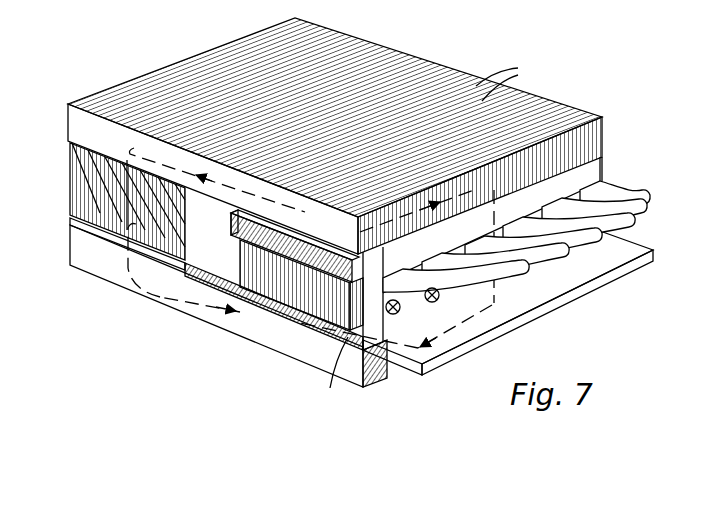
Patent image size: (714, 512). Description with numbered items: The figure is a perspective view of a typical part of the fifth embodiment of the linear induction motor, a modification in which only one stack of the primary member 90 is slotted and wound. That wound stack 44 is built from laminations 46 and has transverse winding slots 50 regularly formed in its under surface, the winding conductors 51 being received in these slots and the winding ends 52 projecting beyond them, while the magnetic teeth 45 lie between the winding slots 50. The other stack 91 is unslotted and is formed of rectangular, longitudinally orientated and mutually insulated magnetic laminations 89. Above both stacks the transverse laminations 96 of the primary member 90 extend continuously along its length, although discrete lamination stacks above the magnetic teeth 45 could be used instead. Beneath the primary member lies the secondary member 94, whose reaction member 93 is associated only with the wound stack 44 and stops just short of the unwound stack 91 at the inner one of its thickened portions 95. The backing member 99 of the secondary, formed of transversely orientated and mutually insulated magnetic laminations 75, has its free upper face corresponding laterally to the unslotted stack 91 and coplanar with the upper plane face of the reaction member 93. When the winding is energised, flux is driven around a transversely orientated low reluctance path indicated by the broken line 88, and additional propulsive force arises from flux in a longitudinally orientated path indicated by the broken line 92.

The primary member 90 is at (128, 79).
The transverse laminations 96 is at (516, 78).
The broken line 88 is at (300, 212).
The unslotted stack 91 is at (93, 208).
The magnetic laminations 89 is at (116, 236).
The backing member 99 is at (125, 268).
The secondary member 94 is at (297, 362).
The magnetic laminations 75 is at (384, 368).
The reaction member 93 is at (426, 370).
The broken line 92 is at (492, 306).
The stack 44 is at (252, 318).
The laminations 46 is at (296, 294).
The magnetic teeth 45 is at (336, 375).
The thickened portions 95 is at (217, 267).
The winding slots 50 is at (372, 322).
The winding ends 52 is at (590, 228).
The winding conductors 51 is at (420, 302).